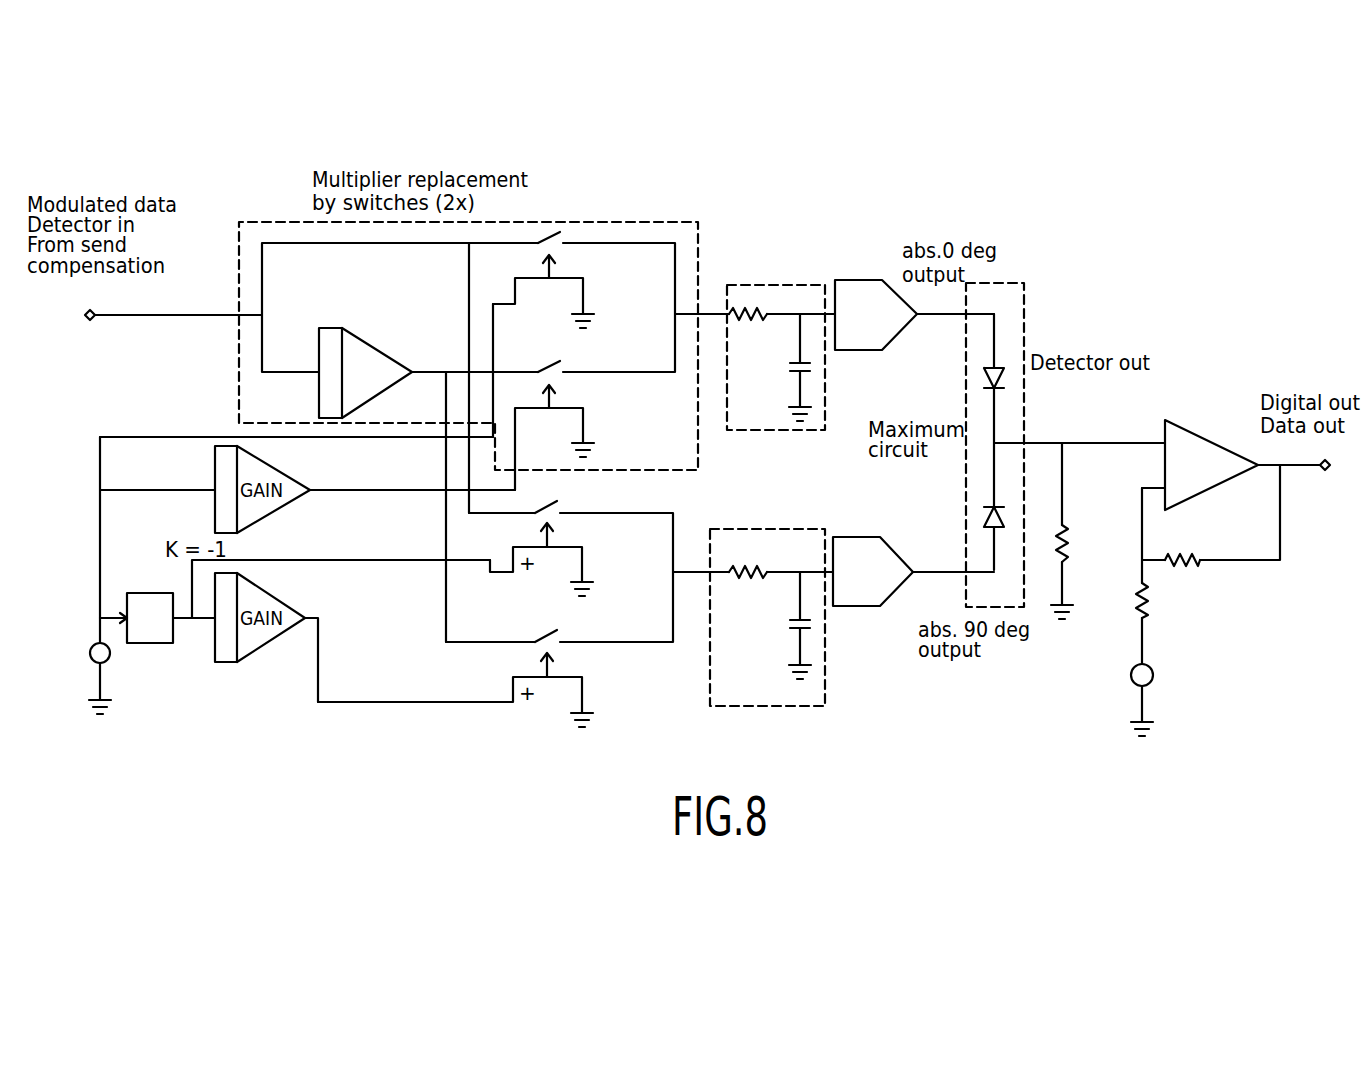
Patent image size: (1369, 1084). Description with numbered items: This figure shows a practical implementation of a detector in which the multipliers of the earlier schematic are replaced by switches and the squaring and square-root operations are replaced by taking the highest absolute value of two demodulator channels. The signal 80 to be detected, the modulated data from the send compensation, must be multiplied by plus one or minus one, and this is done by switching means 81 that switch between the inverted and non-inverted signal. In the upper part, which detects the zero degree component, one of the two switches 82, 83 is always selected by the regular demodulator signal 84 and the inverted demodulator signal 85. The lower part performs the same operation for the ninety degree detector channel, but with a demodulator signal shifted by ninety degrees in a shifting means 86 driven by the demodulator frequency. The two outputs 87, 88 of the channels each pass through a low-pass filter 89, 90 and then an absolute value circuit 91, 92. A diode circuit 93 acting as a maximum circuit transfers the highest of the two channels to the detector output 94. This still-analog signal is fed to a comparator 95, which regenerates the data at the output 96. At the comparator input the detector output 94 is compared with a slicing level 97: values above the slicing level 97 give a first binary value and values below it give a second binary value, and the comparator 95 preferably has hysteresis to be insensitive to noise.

The signal to be detected 80 is at (203, 320).
The switching means 81 is at (482, 408).
The first switch 82 is at (572, 257).
The second switch 83 is at (585, 388).
The regular demodulator signal 84 is at (370, 439).
The inverted demodulator signal 85 is at (370, 492).
The shifting means 86 is at (137, 623).
The first output 87 is at (710, 312).
The second output 88 is at (702, 577).
The first low-pass filter 89 is at (785, 430).
The second low-pass filter 90 is at (783, 706).
The first absolute value circuit 91 is at (860, 343).
The second absolute value circuit 92 is at (863, 593).
The diode circuit 93 is at (1026, 308).
The detector output 94 is at (1107, 442).
The comparator 95 is at (1202, 445).
The output 96 is at (1330, 470).
The slicing level 97 is at (1130, 682).